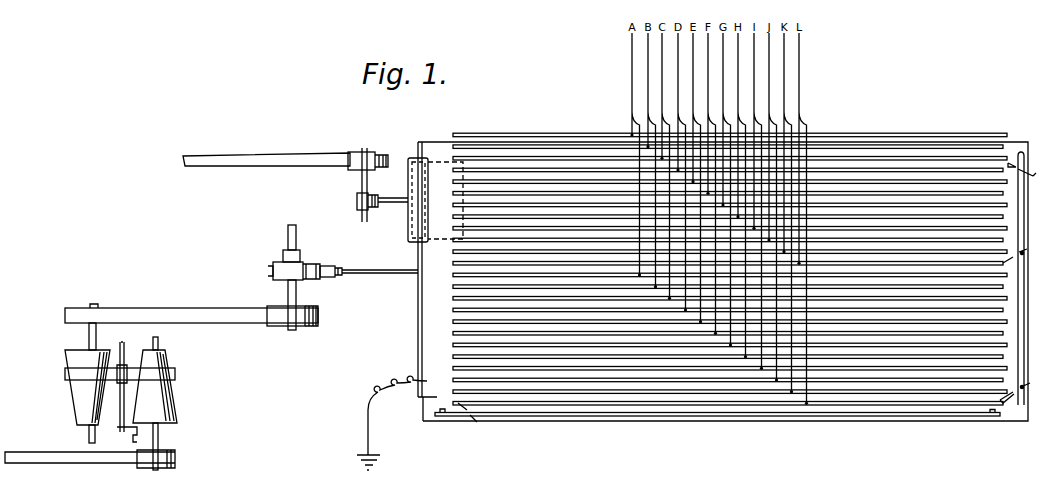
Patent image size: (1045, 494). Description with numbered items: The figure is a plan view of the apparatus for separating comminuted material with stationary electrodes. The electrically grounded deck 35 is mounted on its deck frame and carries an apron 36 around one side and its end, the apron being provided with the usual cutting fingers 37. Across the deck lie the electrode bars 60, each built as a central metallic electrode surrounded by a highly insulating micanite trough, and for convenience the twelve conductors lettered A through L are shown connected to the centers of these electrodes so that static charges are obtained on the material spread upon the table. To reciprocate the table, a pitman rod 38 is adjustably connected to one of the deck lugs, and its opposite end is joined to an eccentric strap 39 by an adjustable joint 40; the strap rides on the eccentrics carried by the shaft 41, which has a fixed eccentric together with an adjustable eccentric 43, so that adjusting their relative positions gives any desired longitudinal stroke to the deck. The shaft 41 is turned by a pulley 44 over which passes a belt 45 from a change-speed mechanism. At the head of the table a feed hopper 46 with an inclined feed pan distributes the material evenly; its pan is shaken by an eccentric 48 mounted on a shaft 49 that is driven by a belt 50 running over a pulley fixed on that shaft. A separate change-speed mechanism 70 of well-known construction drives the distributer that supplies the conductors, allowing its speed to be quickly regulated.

The electrically grounded deck 35 is at (428, 335).
The apron 36 is at (1022, 418).
The cutting fingers 37 is at (1007, 400).
The pitman rod 38 is at (368, 274).
The eccentric strap 39 is at (336, 275).
The adjustable joint 40 is at (328, 269).
The shaft 41 is at (287, 238).
The adjustable eccentric 43 is at (273, 271).
The pulley 44 is at (307, 328).
The belt 45 is at (238, 321).
The feed hopper 46 is at (408, 164).
The eccentric 48 is at (357, 201).
The shaft 49 is at (365, 221).
The belt 50 is at (283, 167).
The electrode bars 60 is at (898, 184).
The change-speed mechanism 70 is at (108, 396).